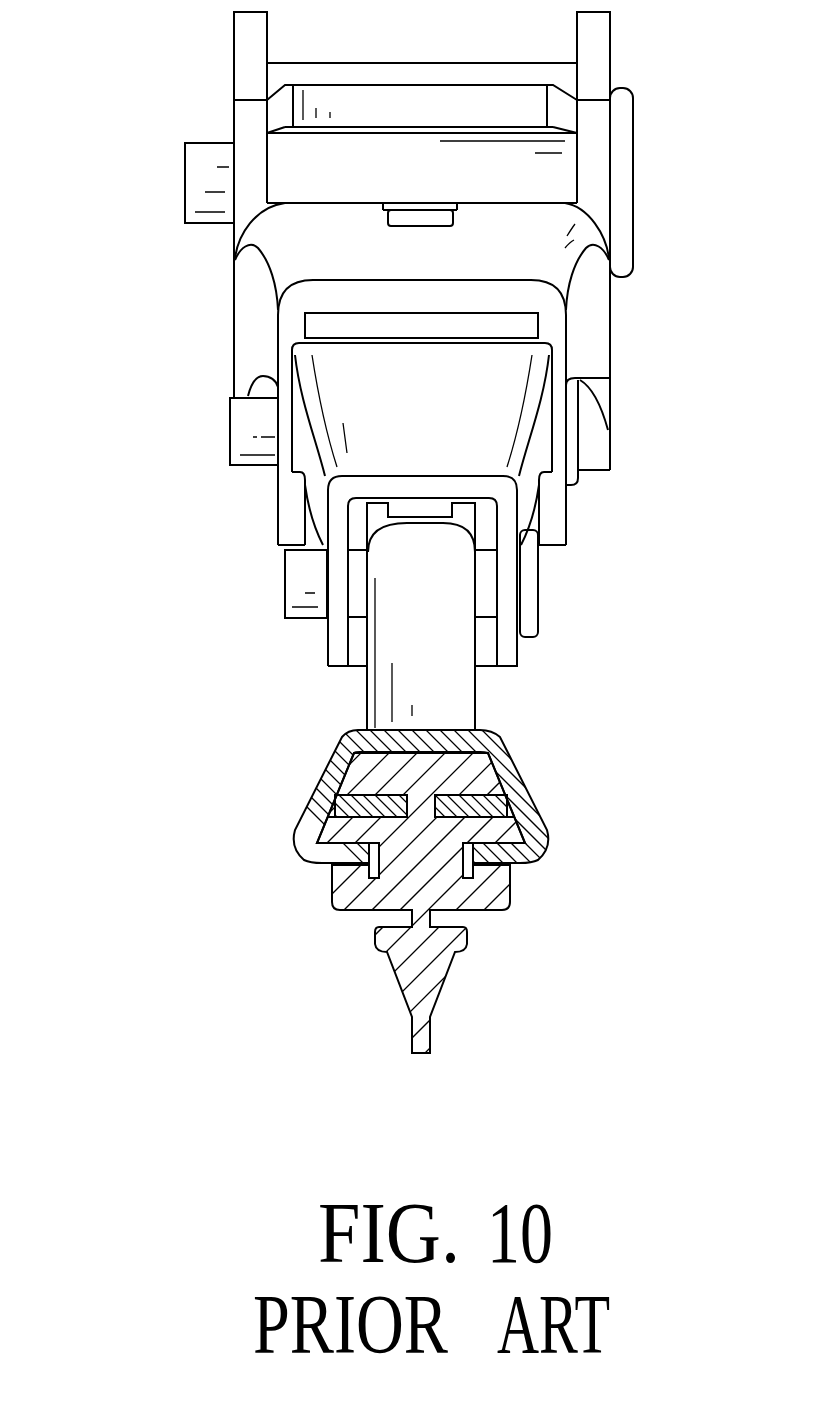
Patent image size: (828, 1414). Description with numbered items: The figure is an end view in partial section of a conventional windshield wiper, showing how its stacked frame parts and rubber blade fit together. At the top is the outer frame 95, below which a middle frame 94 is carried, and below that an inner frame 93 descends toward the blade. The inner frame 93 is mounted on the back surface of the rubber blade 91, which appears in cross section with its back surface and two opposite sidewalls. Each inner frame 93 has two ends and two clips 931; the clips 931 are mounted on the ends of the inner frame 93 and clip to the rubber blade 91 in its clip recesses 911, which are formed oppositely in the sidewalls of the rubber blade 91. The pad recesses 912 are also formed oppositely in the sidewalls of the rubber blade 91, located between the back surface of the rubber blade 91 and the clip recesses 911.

The rubber blade 91 is at (457, 905).
The clip recesses 911 is at (508, 882).
The pad recesses 912 is at (503, 797).
The inner frames 93 is at (393, 670).
The clips 931 is at (503, 762).
The middle frames 94 is at (352, 398).
The outer frame 95 is at (317, 237).